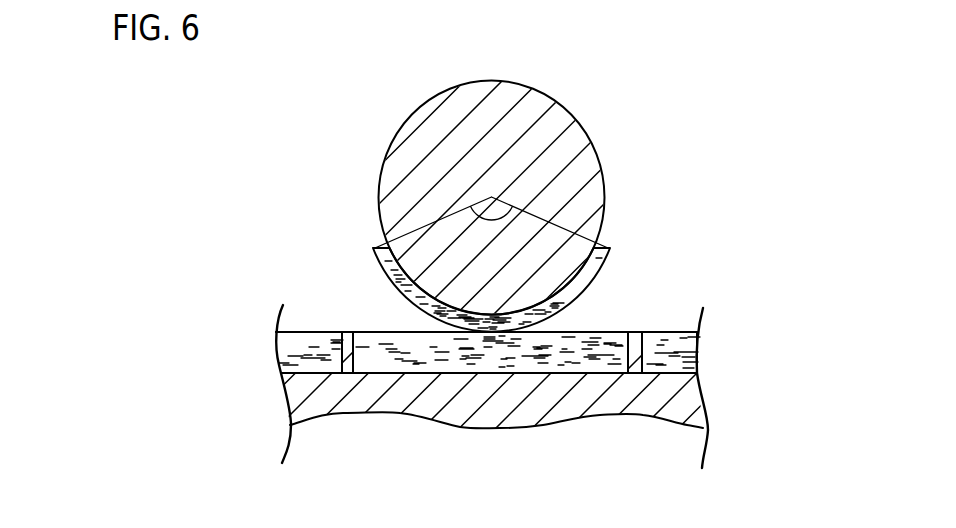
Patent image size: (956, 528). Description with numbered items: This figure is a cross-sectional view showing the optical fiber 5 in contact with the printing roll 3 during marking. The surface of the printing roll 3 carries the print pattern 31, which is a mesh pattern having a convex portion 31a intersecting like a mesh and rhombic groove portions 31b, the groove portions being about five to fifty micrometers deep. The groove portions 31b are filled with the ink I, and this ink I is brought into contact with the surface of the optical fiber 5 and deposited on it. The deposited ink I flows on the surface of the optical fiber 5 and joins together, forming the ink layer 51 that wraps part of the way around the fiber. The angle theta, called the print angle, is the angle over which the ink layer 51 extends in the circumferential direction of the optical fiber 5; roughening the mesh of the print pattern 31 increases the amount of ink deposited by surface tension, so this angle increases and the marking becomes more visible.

The optical fiber 5 is at (494, 80).
The ink layer 51 is at (608, 250).
The printing roll 3 is at (422, 407).
The print pattern 31 is at (690, 212).
The convex portion 31a is at (638, 365).
The groove portion 31b is at (615, 365).
The ink I is at (533, 358).